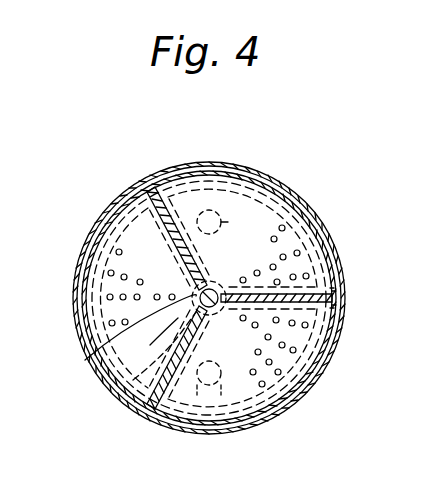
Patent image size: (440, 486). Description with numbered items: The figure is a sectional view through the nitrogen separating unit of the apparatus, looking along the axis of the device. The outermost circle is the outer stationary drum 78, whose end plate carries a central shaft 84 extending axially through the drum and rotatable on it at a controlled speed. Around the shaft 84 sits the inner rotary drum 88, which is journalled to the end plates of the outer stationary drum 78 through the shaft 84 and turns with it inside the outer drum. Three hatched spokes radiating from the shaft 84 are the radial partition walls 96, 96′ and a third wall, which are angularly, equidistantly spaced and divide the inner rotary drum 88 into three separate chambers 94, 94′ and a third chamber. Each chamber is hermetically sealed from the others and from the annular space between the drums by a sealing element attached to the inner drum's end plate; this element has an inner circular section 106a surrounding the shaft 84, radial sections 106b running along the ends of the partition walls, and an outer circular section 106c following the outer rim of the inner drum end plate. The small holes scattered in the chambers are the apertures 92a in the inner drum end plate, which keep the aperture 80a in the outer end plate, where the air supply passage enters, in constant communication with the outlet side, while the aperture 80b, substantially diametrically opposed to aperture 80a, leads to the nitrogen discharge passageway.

The outer stationary drum 78 is at (341, 264).
The aperture 80a is at (229, 410).
The aperture 80b is at (252, 195).
The shaft 84 is at (113, 348).
The inner rotary drum 88 is at (335, 297).
The apertures 92a is at (289, 254).
The chamber 94 is at (252, 388).
The chamber 94′ is at (260, 220).
The radial partition wall 96 is at (333, 353).
The radial partition wall 96′ is at (133, 190).
The inner circular section 106a is at (104, 386).
The radial sections 106b is at (166, 157).
The outer circular section 106c is at (230, 187).